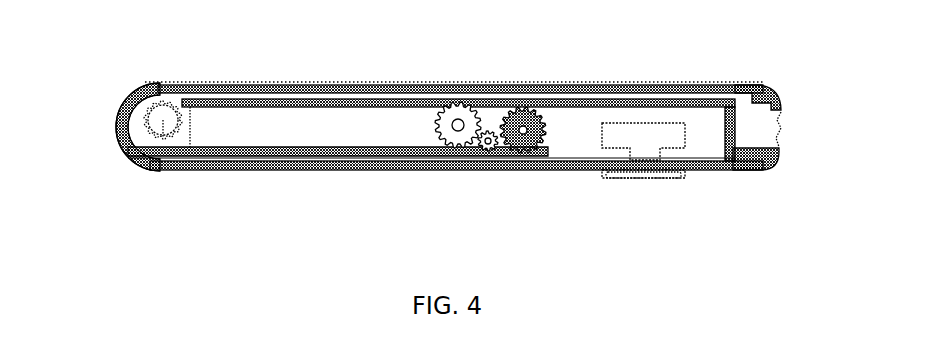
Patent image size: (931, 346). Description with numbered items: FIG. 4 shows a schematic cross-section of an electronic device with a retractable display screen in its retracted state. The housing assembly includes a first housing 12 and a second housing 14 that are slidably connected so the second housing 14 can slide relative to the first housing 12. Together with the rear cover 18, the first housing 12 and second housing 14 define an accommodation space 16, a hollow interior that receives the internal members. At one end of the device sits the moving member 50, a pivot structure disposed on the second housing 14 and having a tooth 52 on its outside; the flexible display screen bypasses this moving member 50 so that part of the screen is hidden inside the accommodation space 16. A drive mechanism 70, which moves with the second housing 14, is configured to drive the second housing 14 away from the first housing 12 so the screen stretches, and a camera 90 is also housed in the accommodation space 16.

The first housing 12 is at (117, 130).
The second housing 14 is at (781, 112).
The accommodation space 16 is at (266, 118).
The rear cover 18 is at (457, 168).
The moving member 50 is at (150, 167).
The tooth 52 is at (130, 157).
The drive mechanism 70 is at (473, 85).
The camera 90 is at (653, 140).